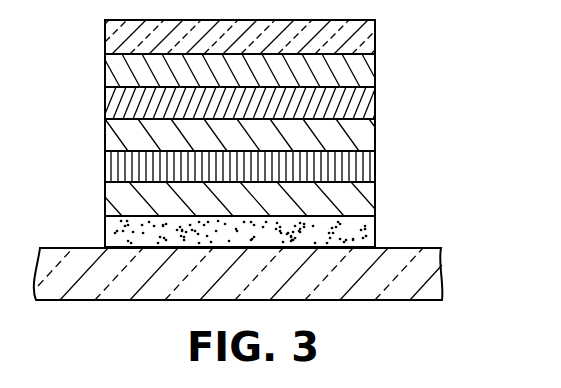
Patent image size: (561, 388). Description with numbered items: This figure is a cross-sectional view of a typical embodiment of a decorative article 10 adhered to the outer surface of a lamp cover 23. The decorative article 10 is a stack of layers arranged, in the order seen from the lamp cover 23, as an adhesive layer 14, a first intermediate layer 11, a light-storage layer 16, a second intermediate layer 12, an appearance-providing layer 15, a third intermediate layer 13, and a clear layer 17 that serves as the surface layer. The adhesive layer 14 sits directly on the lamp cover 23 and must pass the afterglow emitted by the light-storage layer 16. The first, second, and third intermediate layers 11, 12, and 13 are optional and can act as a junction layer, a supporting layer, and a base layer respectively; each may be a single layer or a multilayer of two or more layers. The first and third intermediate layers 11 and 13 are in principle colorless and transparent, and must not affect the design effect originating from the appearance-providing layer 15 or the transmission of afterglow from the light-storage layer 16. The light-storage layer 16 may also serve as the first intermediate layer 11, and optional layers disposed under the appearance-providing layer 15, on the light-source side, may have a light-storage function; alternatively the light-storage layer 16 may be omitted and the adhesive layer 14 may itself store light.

The decorative article 10 is at (433, 23).
The first intermediate layer 11 is at (366, 195).
The second intermediate layer 12 is at (363, 134).
The third intermediate layer 13 is at (365, 68).
The adhesive layer 14 is at (366, 234).
The appearance-providing layer 15 is at (365, 102).
The light-storage layer 16 is at (366, 163).
The clear layer 17 is at (365, 36).
The lamp cover 23 is at (422, 268).